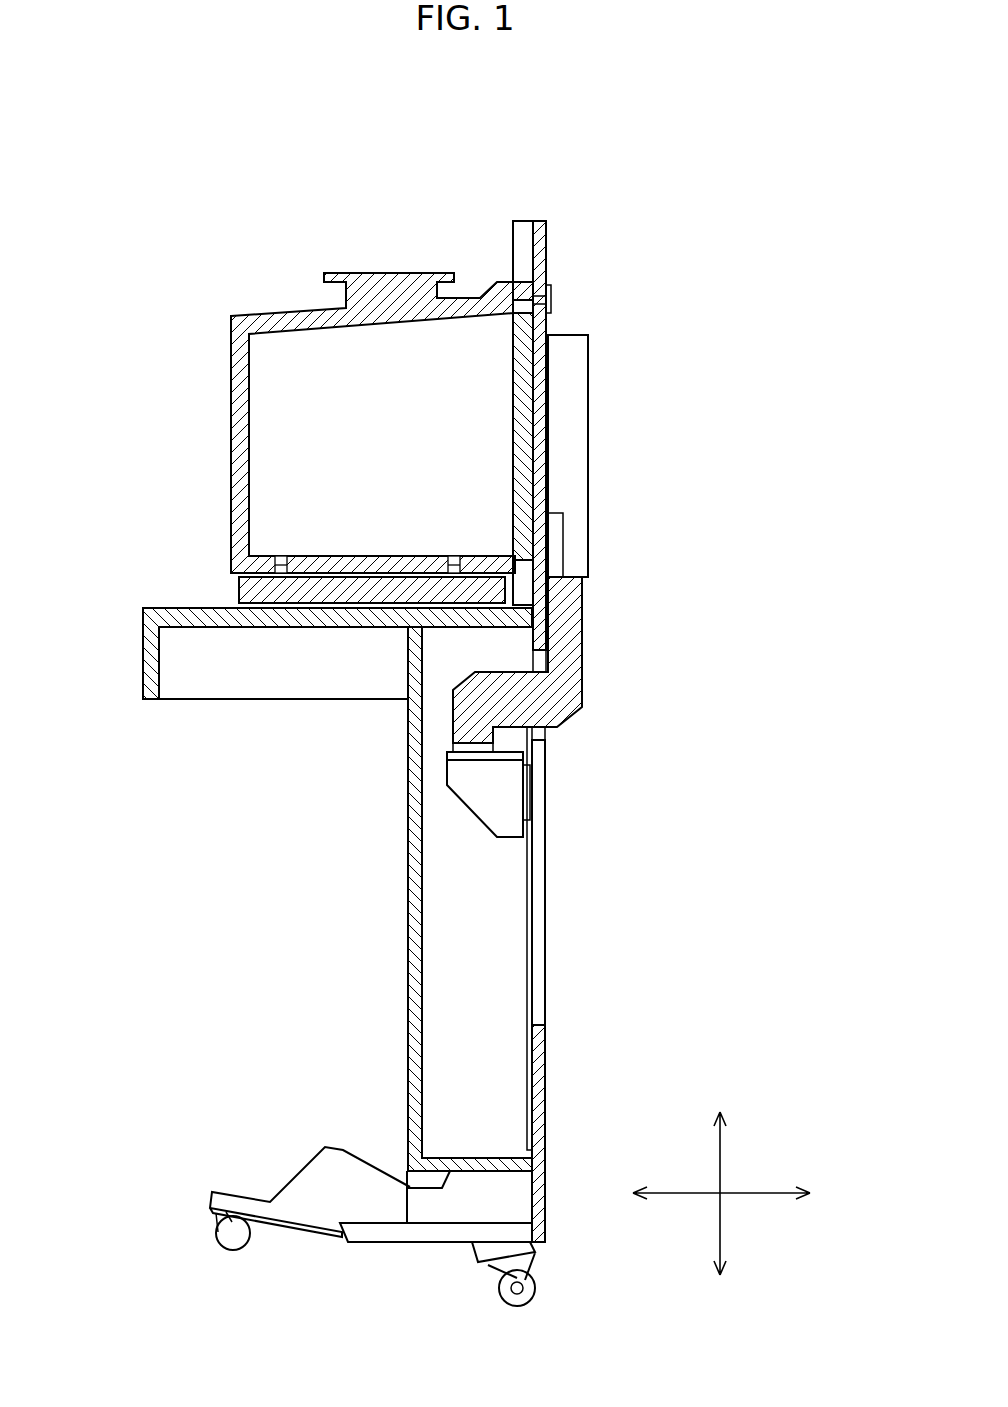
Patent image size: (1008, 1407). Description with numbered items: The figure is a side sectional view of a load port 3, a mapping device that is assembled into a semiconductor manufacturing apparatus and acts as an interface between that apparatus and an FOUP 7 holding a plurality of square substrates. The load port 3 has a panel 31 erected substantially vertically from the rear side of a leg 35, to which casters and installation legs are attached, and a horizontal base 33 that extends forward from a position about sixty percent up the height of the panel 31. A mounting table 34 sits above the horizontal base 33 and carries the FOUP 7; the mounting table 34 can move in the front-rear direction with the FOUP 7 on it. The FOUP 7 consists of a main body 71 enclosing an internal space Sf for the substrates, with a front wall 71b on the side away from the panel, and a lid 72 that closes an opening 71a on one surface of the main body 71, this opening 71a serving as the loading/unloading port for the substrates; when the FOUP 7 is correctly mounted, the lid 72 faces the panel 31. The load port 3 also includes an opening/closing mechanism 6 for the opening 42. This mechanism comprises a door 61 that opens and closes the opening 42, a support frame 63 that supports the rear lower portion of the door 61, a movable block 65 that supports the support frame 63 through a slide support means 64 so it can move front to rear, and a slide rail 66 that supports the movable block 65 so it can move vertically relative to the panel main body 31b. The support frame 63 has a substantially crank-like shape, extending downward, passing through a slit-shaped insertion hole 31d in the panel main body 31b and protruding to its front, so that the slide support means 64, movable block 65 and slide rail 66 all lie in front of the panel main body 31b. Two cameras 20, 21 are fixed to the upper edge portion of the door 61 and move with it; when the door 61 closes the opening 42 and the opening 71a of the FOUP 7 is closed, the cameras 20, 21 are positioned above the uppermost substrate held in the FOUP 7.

The load port 3 is at (658, 122).
The opening/closing mechanism 6 is at (638, 349).
The FOUP 7 is at (291, 255).
The right camera 20 is at (546, 292).
The left camera 21 is at (548, 299).
The panel 31 is at (540, 221).
The panel main body 31b is at (545, 1048).
The insertion hole 31d is at (540, 1022).
The horizontal base 33 is at (143, 660).
The mounting table 34 is at (239, 593).
The leg 35 is at (363, 1249).
The opening 42 is at (546, 312).
The door 61 is at (550, 435).
The support frame 63 is at (582, 677).
The slide support means 64 is at (497, 748).
The movable block 65 is at (453, 793).
The slide rail 66 is at (527, 948).
The main body 71 is at (231, 406).
The opening 71a is at (546, 330).
The front wall 71b is at (250, 366).
The lid 72 is at (513, 355).
The internal space Sf is at (375, 440).